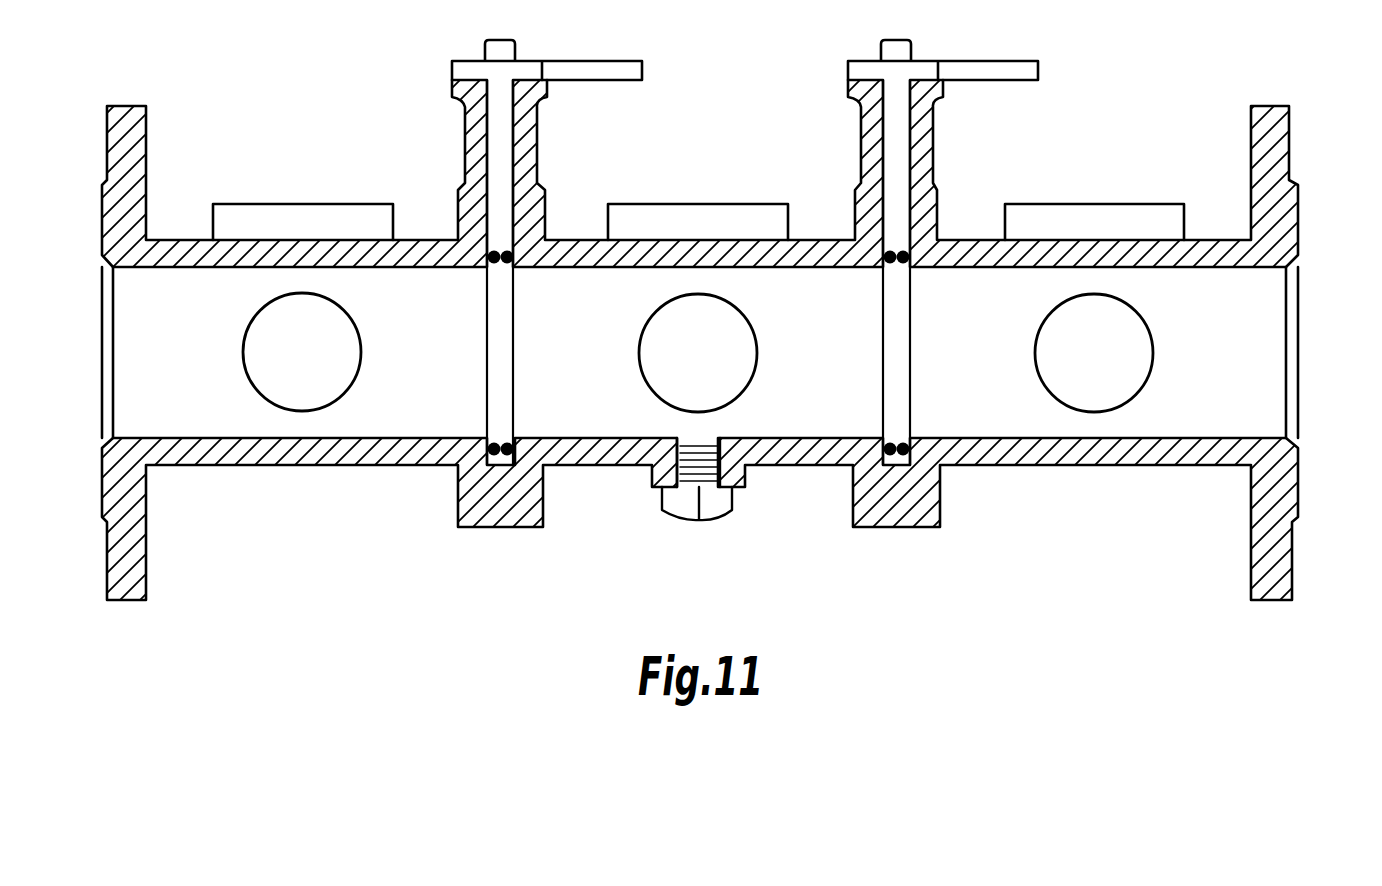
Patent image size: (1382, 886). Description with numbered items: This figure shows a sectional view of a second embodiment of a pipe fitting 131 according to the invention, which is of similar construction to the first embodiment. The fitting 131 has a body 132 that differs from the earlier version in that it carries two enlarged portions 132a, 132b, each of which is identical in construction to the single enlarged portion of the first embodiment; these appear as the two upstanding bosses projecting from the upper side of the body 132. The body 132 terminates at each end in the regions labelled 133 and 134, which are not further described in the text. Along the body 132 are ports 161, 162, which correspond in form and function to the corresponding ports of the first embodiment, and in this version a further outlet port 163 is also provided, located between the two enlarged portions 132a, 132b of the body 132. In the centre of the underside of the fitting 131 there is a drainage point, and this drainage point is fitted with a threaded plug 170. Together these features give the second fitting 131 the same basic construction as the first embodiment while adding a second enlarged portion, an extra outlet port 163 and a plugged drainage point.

The pipe fitting 131 is at (125, 345).
The body 132 is at (285, 460).
The enlarged portion 132a is at (537, 150).
The enlarged portion 132b is at (933, 152).
The left end flange 133 is at (108, 152).
The right end flange 134 is at (1292, 152).
The port 161 is at (340, 343).
The port 162 is at (1132, 345).
The further outlet port 163 is at (736, 345).
The threaded plug 170 is at (717, 505).